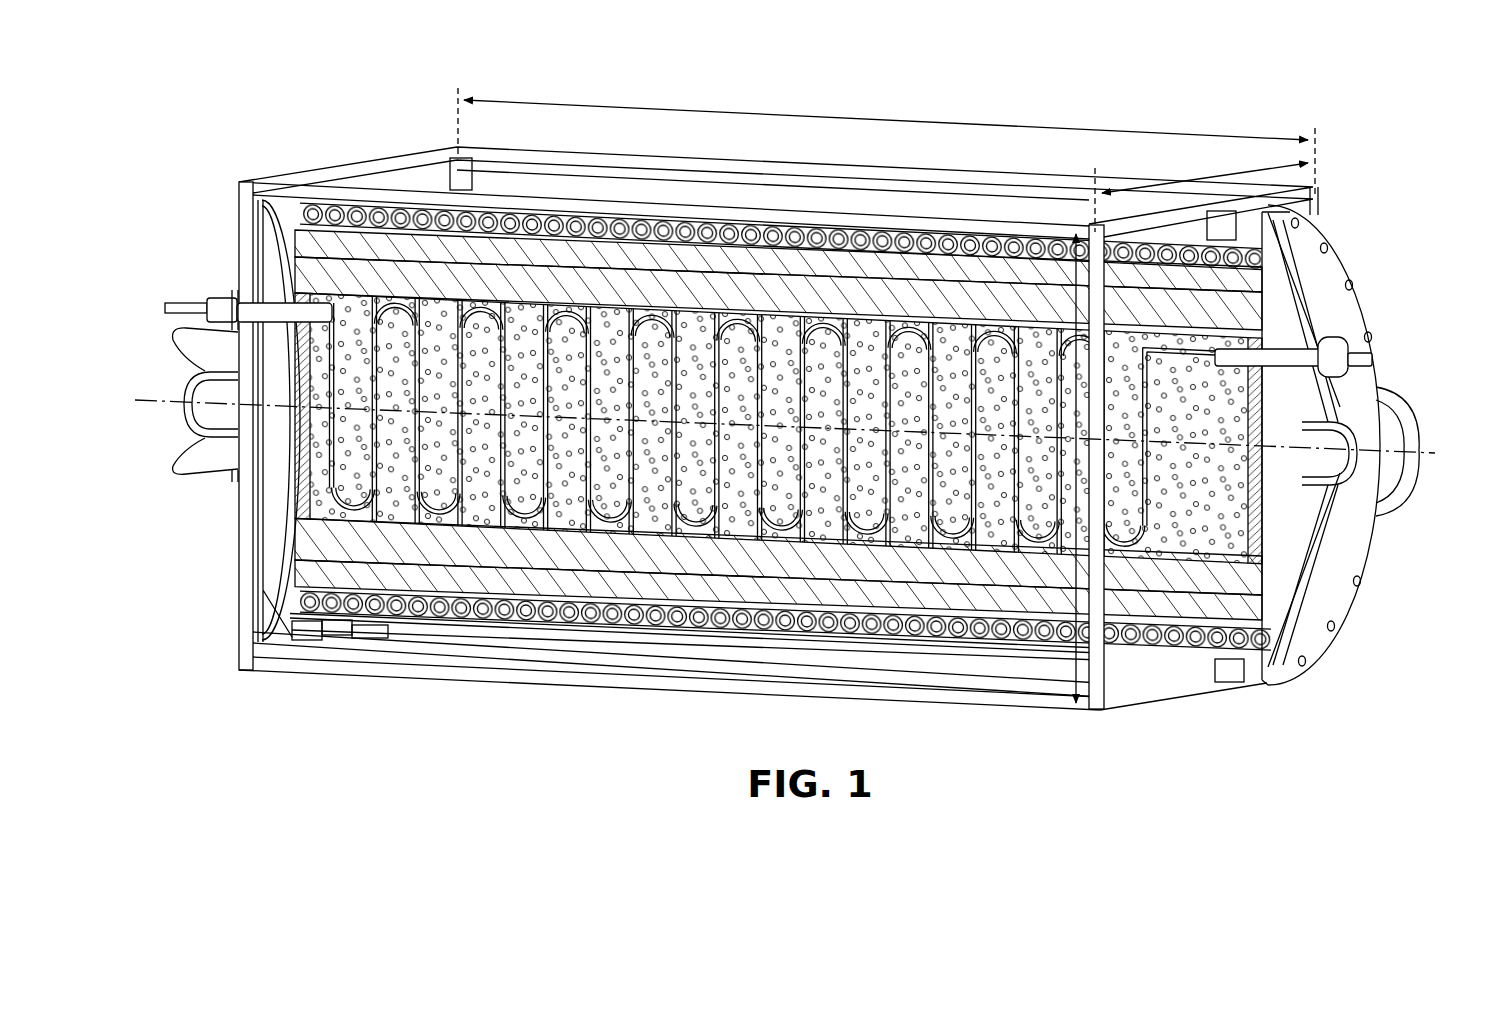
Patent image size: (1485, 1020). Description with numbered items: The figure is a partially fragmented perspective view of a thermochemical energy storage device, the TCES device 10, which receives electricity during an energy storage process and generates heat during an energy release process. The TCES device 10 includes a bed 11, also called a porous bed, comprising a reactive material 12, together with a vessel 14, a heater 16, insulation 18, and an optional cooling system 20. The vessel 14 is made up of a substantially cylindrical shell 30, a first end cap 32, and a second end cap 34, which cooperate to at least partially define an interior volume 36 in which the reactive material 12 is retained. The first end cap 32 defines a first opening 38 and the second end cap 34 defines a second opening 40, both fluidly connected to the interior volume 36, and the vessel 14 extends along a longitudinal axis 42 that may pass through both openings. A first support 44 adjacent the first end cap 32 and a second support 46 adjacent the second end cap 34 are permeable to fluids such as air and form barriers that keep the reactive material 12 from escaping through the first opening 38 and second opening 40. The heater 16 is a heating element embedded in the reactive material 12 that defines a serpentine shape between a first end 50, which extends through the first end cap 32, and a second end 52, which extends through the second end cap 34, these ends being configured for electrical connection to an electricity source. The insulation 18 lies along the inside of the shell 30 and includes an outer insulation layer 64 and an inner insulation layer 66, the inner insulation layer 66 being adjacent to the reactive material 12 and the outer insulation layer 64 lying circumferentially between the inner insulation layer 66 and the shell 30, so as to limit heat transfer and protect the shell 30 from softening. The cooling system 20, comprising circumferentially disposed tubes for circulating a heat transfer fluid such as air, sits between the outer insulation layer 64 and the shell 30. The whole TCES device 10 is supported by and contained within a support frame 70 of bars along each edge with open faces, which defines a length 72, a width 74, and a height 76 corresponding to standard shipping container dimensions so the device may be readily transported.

The TCES device 10 is at (232, 98).
The bed 11 is at (432, 311).
The reactive material 12 is at (320, 498).
The vessel 14 is at (443, 622).
The heater 16 is at (720, 301).
The insulation 18 is at (296, 560).
The cooling system 20 is at (518, 612).
The shell 30 is at (623, 626).
The first end cap 32 is at (268, 350).
The second end cap 34 is at (1330, 302).
The interior volume 36 is at (860, 305).
The first opening 38 is at (200, 383).
The second opening 40 is at (1376, 425).
The longitudinal axis 42 is at (215, 403).
The first support 44 is at (298, 452).
The second support 46 is at (1258, 465).
The first end 50 is at (184, 302).
The second end 52 is at (1350, 352).
The outer insulation layer 64 is at (862, 590).
The inner insulation layer 66 is at (780, 560).
The support frame 70 is at (960, 688).
The length 72 is at (1230, 136).
The width 74 is at (1250, 163).
The height 76 is at (1080, 702).